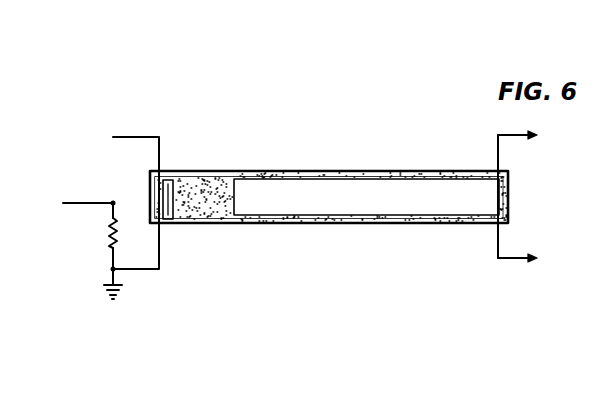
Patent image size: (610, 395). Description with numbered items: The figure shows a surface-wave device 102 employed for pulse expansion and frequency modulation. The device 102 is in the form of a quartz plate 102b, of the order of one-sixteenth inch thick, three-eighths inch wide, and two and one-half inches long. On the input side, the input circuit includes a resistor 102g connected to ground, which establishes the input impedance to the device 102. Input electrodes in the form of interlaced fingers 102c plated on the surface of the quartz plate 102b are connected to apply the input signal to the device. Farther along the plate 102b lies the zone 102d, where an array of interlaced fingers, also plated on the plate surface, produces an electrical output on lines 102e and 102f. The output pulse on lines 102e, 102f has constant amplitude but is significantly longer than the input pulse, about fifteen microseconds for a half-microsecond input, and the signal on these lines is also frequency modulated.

The surface-wave device 102 is at (273, 171).
The quartz plate 102b is at (195, 192).
The fingers 102c is at (175, 198).
The zone 102d is at (392, 203).
The output line 102e is at (523, 138).
The output line 102f is at (510, 262).
The resistor 102g is at (109, 236).